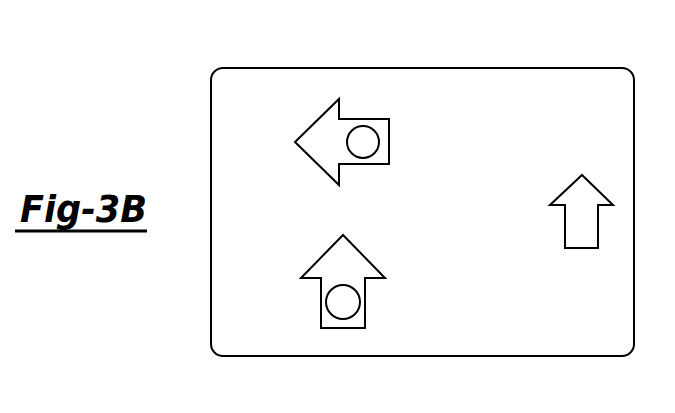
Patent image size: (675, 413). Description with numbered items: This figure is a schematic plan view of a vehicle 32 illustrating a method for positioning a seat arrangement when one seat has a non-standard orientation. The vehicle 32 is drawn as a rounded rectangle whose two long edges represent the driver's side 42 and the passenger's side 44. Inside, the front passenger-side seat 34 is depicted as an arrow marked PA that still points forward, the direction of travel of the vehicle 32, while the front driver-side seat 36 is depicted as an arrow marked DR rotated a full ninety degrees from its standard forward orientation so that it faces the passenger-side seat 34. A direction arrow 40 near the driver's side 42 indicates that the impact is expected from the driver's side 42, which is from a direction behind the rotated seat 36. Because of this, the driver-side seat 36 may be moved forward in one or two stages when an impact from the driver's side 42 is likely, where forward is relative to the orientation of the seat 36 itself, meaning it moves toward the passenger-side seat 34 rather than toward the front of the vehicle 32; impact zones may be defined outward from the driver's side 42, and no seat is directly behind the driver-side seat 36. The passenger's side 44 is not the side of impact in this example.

The vehicle 32 is at (552, 68).
The front passenger-side seat 34 is at (389, 143).
The front driver-side seat 36 is at (365, 303).
The direction arrow 40 is at (565, 228).
The driver's side 42 is at (492, 356).
The passenger's side 44 is at (408, 68).